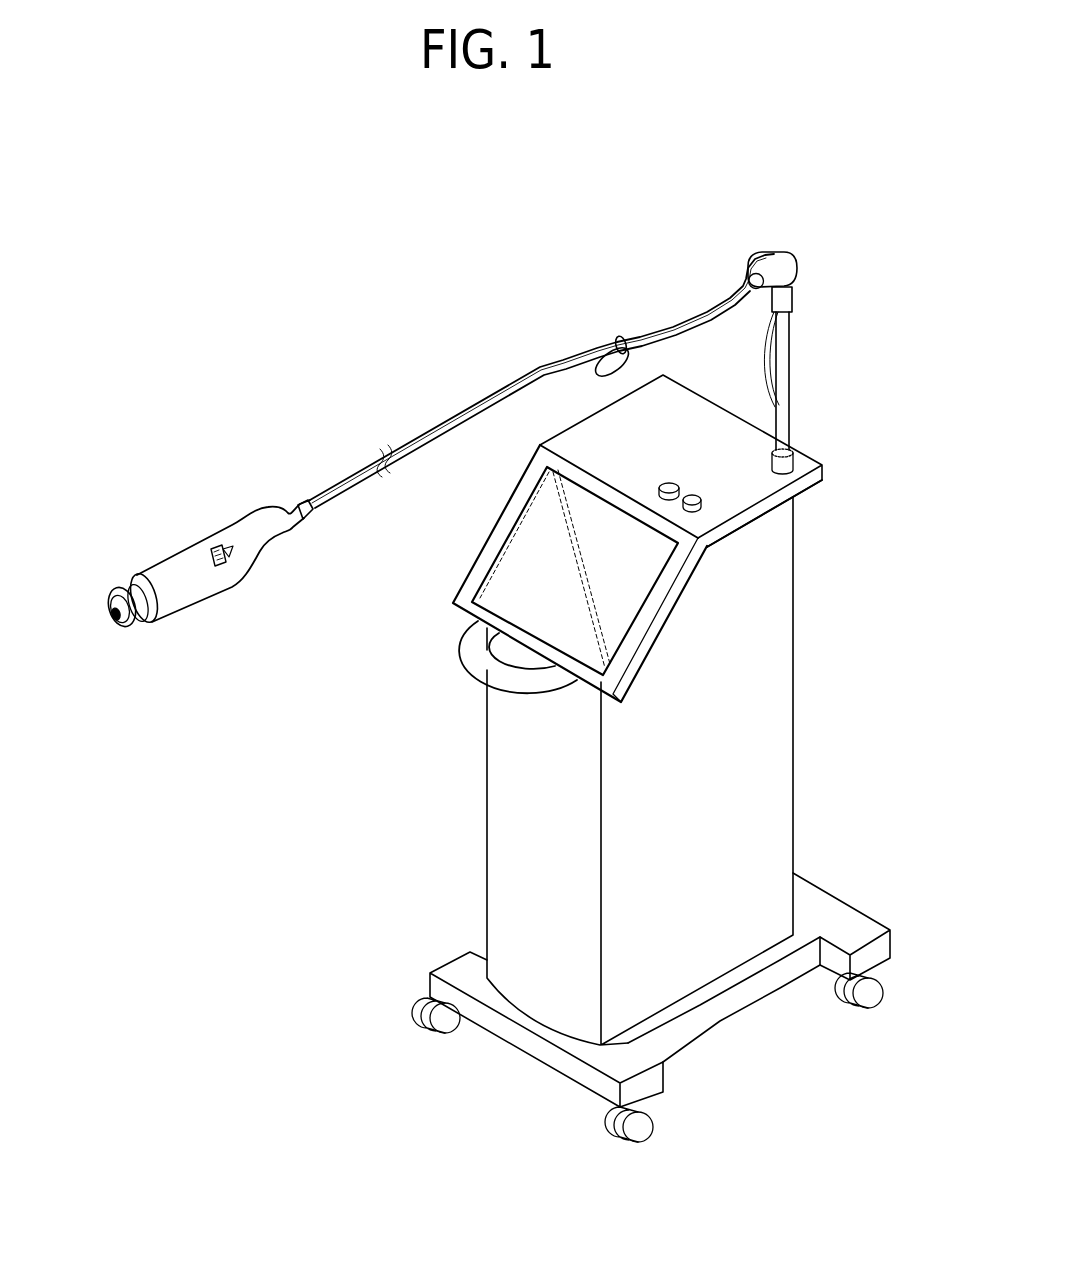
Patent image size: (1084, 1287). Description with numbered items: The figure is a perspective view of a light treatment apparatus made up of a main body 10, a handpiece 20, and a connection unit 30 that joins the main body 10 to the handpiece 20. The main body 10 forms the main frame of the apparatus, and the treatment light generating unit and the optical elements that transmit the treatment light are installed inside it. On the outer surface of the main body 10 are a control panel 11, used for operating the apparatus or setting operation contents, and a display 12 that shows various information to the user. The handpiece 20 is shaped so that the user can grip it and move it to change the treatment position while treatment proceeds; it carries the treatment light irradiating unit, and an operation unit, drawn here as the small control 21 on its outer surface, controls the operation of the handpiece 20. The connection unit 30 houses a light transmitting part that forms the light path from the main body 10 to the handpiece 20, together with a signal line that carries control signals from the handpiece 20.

The main body 10 is at (772, 663).
The control panel 11 is at (700, 495).
The display 12 is at (523, 557).
The handpiece 20 is at (172, 558).
The operation button 21 is at (229, 558).
The connection unit 30 is at (548, 365).